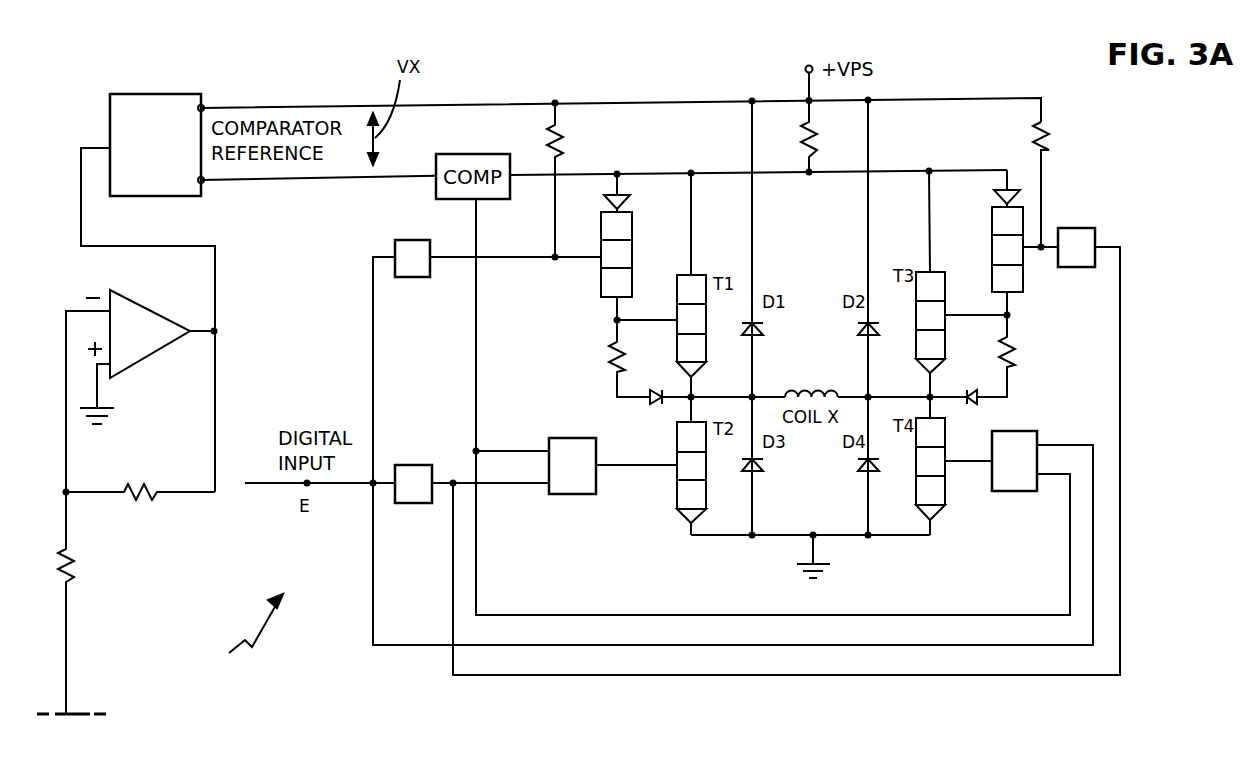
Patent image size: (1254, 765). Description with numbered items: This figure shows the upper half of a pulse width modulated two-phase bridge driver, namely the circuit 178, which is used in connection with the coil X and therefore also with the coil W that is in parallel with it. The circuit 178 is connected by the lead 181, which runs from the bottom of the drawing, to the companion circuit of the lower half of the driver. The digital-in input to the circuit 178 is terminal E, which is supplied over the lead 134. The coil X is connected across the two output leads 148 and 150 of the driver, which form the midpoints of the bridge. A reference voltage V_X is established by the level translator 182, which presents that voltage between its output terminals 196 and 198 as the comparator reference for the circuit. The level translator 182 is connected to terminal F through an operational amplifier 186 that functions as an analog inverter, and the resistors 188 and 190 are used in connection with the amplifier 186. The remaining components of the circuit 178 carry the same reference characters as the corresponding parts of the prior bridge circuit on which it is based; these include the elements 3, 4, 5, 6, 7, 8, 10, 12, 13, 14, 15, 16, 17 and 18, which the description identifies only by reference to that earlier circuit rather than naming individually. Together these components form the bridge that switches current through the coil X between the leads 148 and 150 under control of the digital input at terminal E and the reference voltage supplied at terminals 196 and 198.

The output terminal 196 is at (221, 85).
The output terminal 198 is at (224, 202).
The level translator 182 is at (155, 163).
The operational amplifier 186 is at (140, 380).
The resistor 188 is at (140, 470).
The resistor 190 is at (99, 603).
The lead 181 is at (88, 685).
The lead 134 is at (276, 518).
The circuit 178 is at (248, 640).
The inverter 3 is at (412, 281).
The inverter 13 is at (413, 508).
The conductor 12 is at (501, 517).
The amplifier 17 is at (572, 494).
The conductor 18 is at (636, 508).
The switching transistor 4 is at (631, 235).
The resistor 10 is at (830, 136).
The output lead 148 is at (753, 364).
The output lead 150 is at (871, 374).
The switching transistor 16 is at (986, 231).
The conductor 14 is at (1040, 276).
The inverter 15 is at (1076, 266).
The conductor 5 is at (1065, 517).
The conductor 8 is at (968, 500).
The amplifier 7 is at (1014, 485).
The conductor 6 is at (1038, 544).